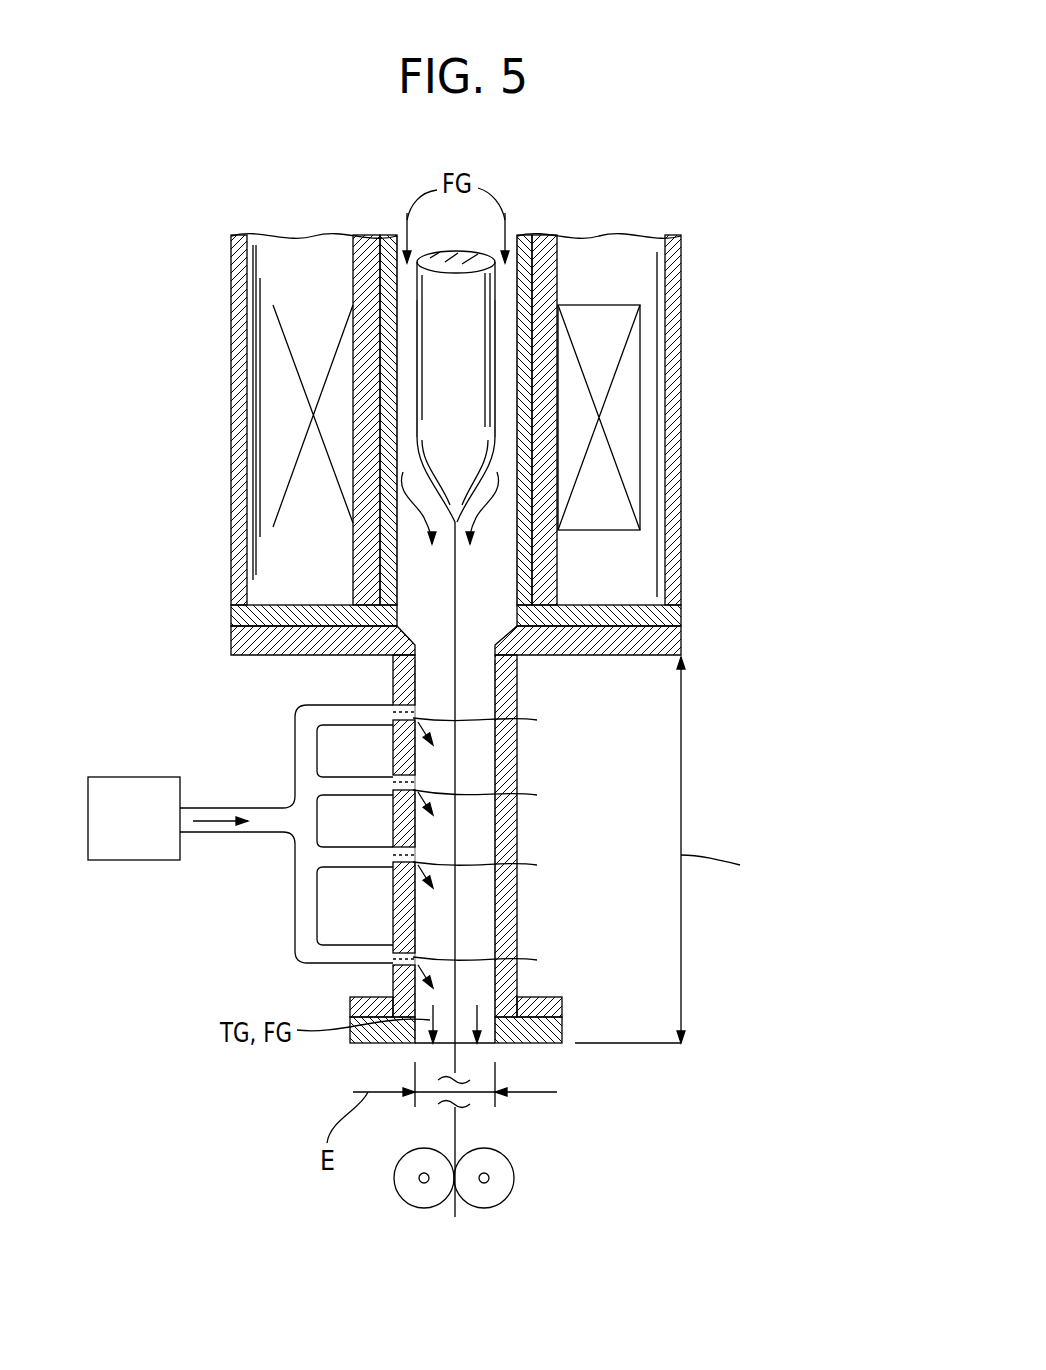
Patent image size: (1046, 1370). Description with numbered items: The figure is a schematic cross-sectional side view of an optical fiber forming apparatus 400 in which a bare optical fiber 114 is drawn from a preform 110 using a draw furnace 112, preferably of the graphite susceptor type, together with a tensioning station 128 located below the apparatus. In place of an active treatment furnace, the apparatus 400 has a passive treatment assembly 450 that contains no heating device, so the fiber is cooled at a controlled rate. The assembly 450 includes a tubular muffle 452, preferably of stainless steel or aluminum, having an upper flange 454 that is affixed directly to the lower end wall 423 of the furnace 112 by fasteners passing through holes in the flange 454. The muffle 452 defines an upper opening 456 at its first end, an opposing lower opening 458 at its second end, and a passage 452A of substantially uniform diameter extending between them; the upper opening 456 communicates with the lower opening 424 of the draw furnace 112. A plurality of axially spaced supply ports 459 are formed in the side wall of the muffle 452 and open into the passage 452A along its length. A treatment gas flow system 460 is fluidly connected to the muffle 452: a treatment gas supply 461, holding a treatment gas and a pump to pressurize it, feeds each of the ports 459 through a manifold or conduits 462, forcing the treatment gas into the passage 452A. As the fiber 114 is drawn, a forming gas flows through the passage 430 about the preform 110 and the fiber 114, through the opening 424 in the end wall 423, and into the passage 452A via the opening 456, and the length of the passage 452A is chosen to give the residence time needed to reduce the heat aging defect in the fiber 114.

The optical fiber forming apparatus 400 is at (752, 195).
The passage 430 is at (497, 337).
The preform 110 is at (440, 352).
The draw furnace 112 is at (683, 475).
The optical fiber 114 is at (455, 559).
The lower opening 424 is at (480, 590).
The lower end wall 423 is at (668, 618).
The upper flange 454 is at (668, 640).
The upper opening 456 is at (448, 640).
The passive treatment assembly 450 is at (546, 875).
The tubular muffle 452 is at (503, 818).
The passage 452A is at (458, 920).
The lower opening 458 is at (485, 1047).
The supply ports 459 is at (393, 718).
The treatment gas flow system 460 is at (240, 817).
The treatment gas supply 461 is at (110, 860).
The manifold or conduits 462 is at (295, 873).
The tensioning station 128 is at (518, 1168).